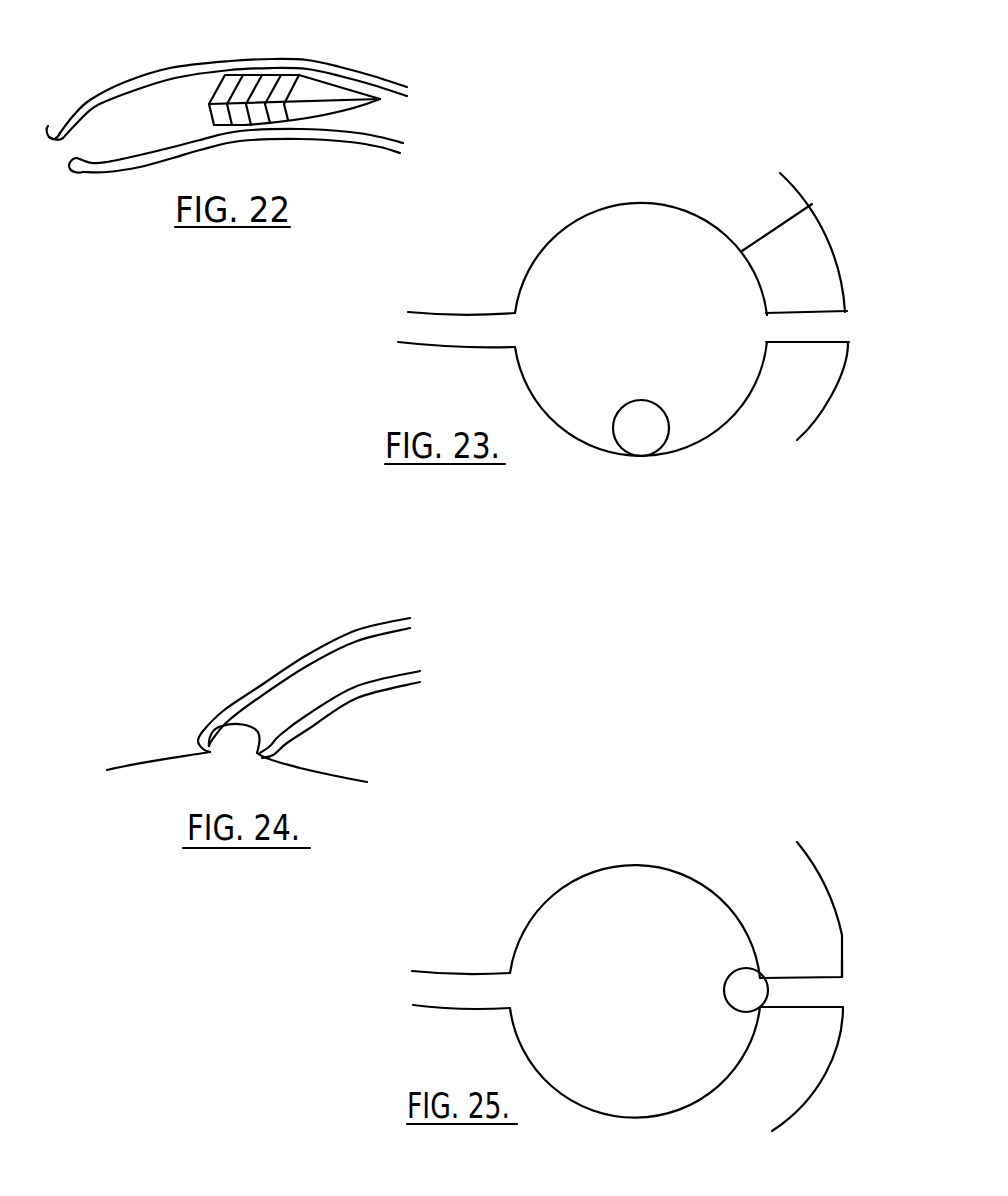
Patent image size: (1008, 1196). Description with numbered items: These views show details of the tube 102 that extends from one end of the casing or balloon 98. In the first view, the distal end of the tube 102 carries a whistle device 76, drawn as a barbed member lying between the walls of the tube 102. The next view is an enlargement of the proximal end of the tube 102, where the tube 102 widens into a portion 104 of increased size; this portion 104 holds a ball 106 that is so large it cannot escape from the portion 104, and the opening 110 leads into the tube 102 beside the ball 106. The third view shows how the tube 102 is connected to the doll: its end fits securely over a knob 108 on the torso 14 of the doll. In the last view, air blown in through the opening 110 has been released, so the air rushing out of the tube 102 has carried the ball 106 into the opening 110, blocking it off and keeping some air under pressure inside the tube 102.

In FIG. 22, the tube 102 is at (174, 107).
In FIG. 23, the tube 102 is at (470, 327).
In FIG. 24, the tube 102 is at (337, 657).
In FIG. 25, the tube 102 is at (468, 993).
In FIG. 22, the whistle device 76 is at (304, 88).
In FIG. 23, the portion of increased size 104 is at (812, 206).
In FIG. 25, the portion of increased size 104 is at (697, 1103).
In FIG. 23, the casing or balloon 98 is at (812, 255).
In FIG. 25, the casing or balloon 98 is at (790, 873).
In FIG. 23, the opening 110 is at (837, 328).
In FIG. 25, the opening 110 is at (827, 992).
In FIG. 23, the ball 106 is at (635, 438).
In FIG. 25, the ball 106 is at (735, 997).
In FIG. 24, the knob 108 is at (238, 733).
In FIG. 24, the torso 14 is at (273, 787).